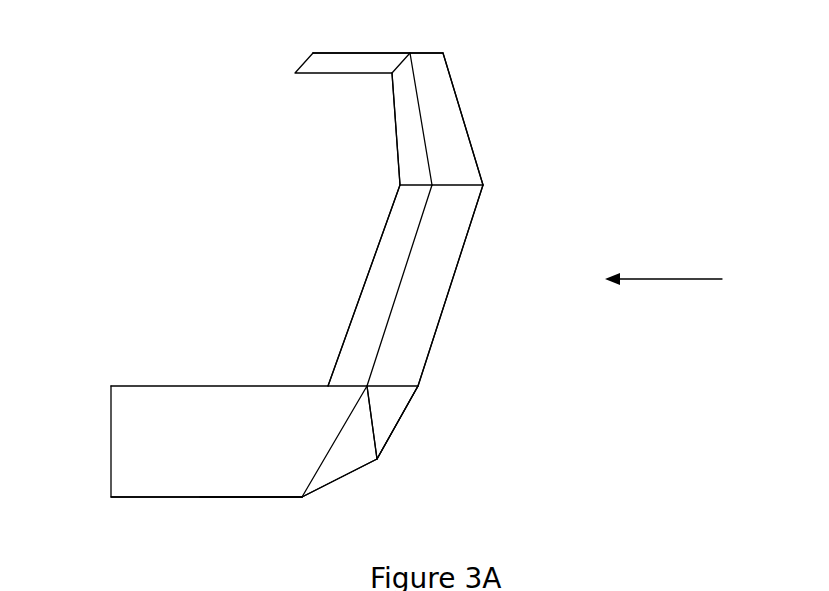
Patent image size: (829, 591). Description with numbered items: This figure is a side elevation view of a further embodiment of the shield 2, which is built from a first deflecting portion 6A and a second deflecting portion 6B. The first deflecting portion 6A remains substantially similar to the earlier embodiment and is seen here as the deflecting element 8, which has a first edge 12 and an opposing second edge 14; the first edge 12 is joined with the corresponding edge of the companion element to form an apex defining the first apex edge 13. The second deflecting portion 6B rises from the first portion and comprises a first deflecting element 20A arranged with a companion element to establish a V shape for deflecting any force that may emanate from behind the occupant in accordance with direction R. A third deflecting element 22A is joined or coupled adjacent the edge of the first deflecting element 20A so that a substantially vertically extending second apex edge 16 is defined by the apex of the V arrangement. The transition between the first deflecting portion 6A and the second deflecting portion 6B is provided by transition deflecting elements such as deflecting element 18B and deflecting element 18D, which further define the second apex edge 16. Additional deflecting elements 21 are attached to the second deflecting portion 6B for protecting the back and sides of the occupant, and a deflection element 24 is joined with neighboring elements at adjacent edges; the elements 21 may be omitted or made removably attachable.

The shield 2 is at (165, 193).
The first deflecting portion 6A is at (153, 362).
The second deflecting portion 6B is at (508, 233).
The deflecting element 8 is at (170, 445).
The first edge 12 is at (217, 497).
The first apex edge 13 is at (167, 498).
The second edge 14 is at (216, 386).
The second apex edge 16 is at (477, 155).
The deflecting element 18B is at (340, 459).
The deflecting element 18D is at (388, 412).
The first deflecting element 20A is at (422, 340).
The additional deflecting element 21 is at (323, 63).
The third deflecting element 22A is at (447, 98).
The deflection element 24 is at (383, 53).
The direction R is at (658, 279).